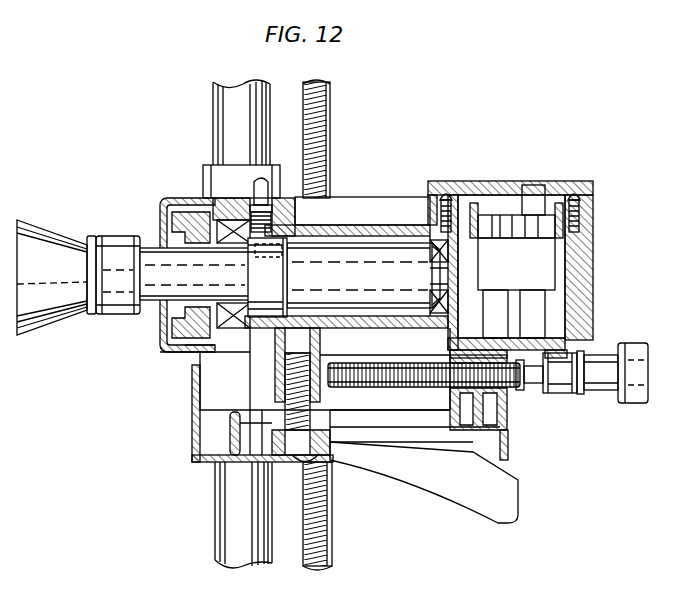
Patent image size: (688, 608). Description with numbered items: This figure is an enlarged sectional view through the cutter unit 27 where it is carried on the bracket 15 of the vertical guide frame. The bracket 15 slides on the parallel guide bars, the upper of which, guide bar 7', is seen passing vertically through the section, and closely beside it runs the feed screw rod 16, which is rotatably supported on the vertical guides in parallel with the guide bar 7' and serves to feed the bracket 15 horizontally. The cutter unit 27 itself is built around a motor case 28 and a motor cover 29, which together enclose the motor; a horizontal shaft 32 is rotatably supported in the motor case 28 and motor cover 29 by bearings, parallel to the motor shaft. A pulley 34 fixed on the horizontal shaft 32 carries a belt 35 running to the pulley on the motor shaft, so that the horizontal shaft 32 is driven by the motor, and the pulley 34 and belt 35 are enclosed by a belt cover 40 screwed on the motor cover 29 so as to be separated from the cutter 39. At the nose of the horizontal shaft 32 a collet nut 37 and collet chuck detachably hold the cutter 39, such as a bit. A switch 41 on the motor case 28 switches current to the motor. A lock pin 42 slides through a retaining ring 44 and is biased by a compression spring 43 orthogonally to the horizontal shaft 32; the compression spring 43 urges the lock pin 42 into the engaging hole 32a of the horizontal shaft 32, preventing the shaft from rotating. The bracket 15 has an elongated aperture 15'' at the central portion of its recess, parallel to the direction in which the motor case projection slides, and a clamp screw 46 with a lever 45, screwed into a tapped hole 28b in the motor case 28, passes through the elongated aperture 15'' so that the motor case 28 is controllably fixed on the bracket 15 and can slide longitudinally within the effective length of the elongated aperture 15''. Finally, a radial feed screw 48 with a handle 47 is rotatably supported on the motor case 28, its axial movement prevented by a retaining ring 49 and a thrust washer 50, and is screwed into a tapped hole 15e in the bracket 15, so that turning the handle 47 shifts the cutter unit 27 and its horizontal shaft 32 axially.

The guide bar 7' is at (218, 324).
The bracket 15 is at (452, 417).
The tapped hole 15e is at (452, 382).
The elongated aperture 15'' is at (390, 456).
The feed screw rod 16 is at (331, 130).
The cutter unit 27 is at (152, 289).
The motor case 28 is at (405, 321).
The tapped hole 28b is at (316, 342).
The motor cover 29 is at (232, 193).
The horizontal shaft 32 is at (377, 248).
The engaging hole 32a is at (286, 265).
The pulley 34 is at (160, 337).
The belt 35 is at (183, 347).
The collet nut 37 is at (110, 314).
The cutter 39 is at (42, 222).
The belt cover 40 is at (190, 352).
The switch 41 is at (542, 262).
The lock pin 42 is at (259, 180).
The compression spring 43 is at (286, 214).
The retaining ring 44 is at (277, 202).
The lever 45 is at (455, 486).
The clamp screw 46 is at (332, 463).
The handle 47 is at (641, 372).
The radial feed screw 48 is at (511, 386).
The retaining ring 49 is at (546, 394).
The thrust washer 50 is at (579, 395).